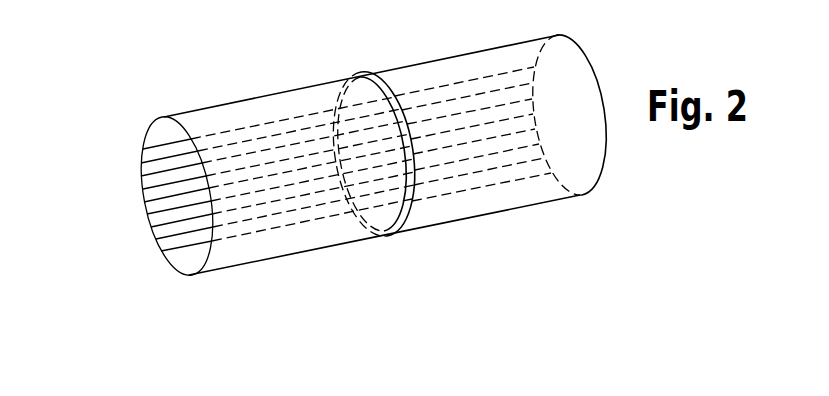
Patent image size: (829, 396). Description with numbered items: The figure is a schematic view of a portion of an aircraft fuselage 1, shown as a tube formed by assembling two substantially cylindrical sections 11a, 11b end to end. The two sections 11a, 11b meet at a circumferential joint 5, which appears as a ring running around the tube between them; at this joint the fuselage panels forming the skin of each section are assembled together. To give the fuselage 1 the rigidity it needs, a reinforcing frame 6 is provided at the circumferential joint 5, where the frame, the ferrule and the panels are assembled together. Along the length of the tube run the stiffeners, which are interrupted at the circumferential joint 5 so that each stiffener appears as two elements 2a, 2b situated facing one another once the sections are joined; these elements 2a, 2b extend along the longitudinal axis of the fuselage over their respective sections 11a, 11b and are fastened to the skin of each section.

The aircraft fuselage 1 is at (185, 73).
The stiffener element 2a is at (150, 188).
The stiffener element 2b is at (487, 114).
The circumferential joint 5 is at (351, 62).
The reinforcing frame 6 is at (399, 234).
The cylindrical section 11a is at (299, 260).
The cylindrical section 11b is at (523, 217).